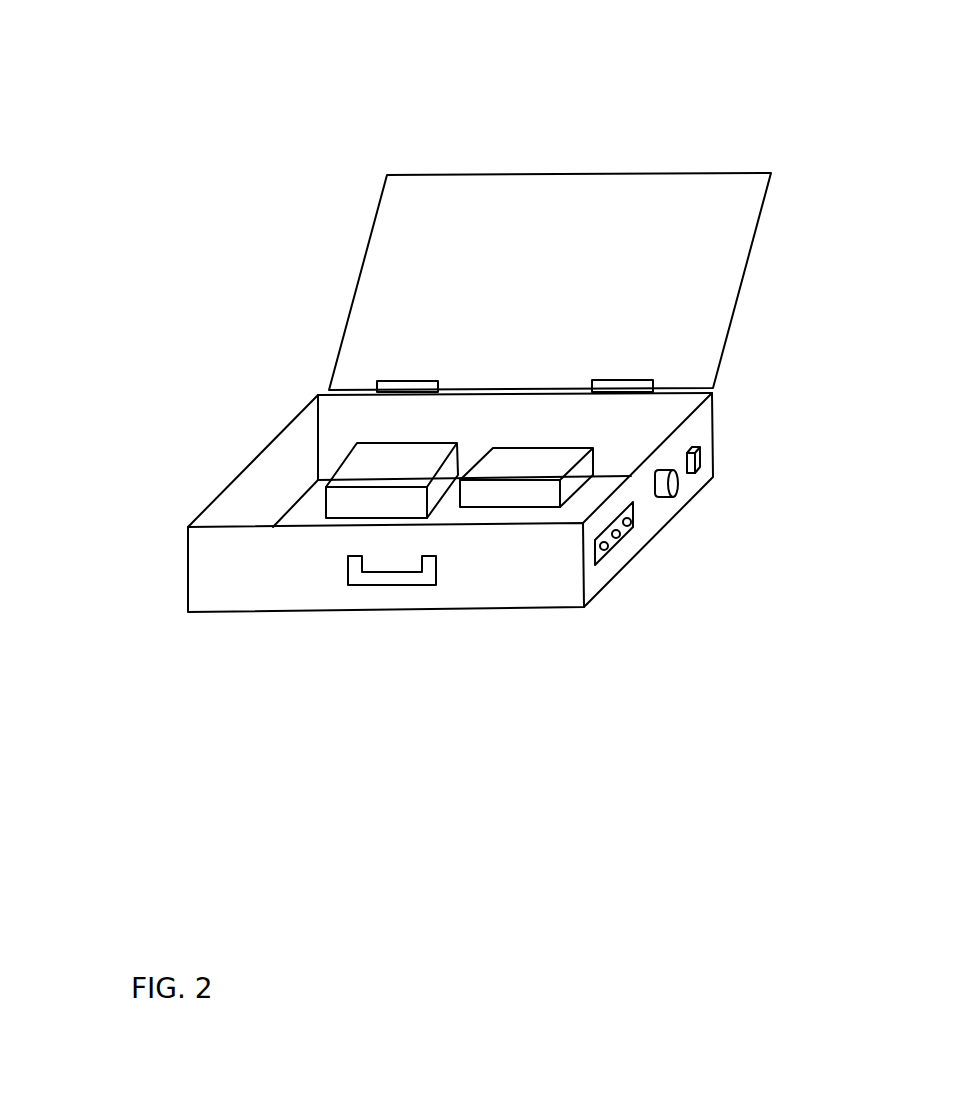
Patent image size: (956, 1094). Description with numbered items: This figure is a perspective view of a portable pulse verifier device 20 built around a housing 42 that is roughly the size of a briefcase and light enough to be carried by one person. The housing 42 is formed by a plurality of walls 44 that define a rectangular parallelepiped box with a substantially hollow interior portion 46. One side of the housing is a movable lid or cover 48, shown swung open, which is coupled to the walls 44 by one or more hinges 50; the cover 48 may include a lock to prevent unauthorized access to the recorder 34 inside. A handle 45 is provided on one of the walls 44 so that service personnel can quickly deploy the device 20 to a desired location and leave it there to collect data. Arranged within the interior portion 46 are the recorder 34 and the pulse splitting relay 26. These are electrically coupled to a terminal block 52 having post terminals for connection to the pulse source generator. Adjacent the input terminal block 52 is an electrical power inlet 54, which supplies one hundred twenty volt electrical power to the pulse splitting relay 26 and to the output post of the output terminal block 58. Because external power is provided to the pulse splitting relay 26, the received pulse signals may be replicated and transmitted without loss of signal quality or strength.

The portable pulse verifier device 20 is at (167, 139).
The pulse splitting relay 26 is at (530, 465).
The recorder 34 is at (355, 465).
The housing 42 is at (441, 544).
The walls 44 is at (213, 565).
The handle 45 is at (397, 585).
The interior portion 46 is at (279, 484).
The cover 48 is at (353, 290).
The hinges 50 is at (620, 380).
The terminal block 52 is at (608, 555).
The electrical power inlet 54 is at (670, 496).
The output terminal block 58 is at (697, 460).